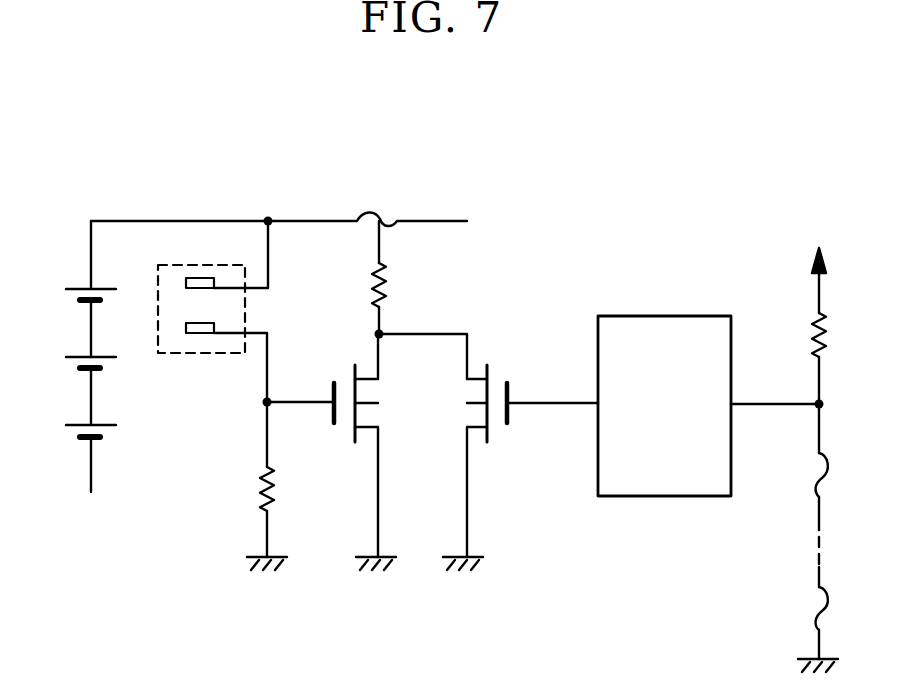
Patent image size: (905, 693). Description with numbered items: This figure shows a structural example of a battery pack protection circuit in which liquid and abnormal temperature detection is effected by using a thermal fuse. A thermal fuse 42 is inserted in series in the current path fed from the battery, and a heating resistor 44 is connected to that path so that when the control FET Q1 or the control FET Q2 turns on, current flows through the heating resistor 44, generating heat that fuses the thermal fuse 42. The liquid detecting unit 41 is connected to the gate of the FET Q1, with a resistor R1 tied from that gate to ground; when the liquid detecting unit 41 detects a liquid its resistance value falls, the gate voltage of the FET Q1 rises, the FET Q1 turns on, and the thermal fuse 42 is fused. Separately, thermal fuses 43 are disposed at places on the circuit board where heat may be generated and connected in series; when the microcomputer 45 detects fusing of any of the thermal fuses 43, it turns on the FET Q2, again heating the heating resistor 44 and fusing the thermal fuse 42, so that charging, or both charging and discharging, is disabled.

The liquid detecting unit 41 is at (200, 353).
The thermal fuse 42 is at (380, 216).
The thermal fuses 43 is at (815, 500).
The heating resistor 44 is at (388, 289).
The microcomputer 45 is at (661, 316).
The resistor R1 is at (251, 486).
The control FET Q1 is at (331, 452).
The control FET Q2 is at (488, 452).